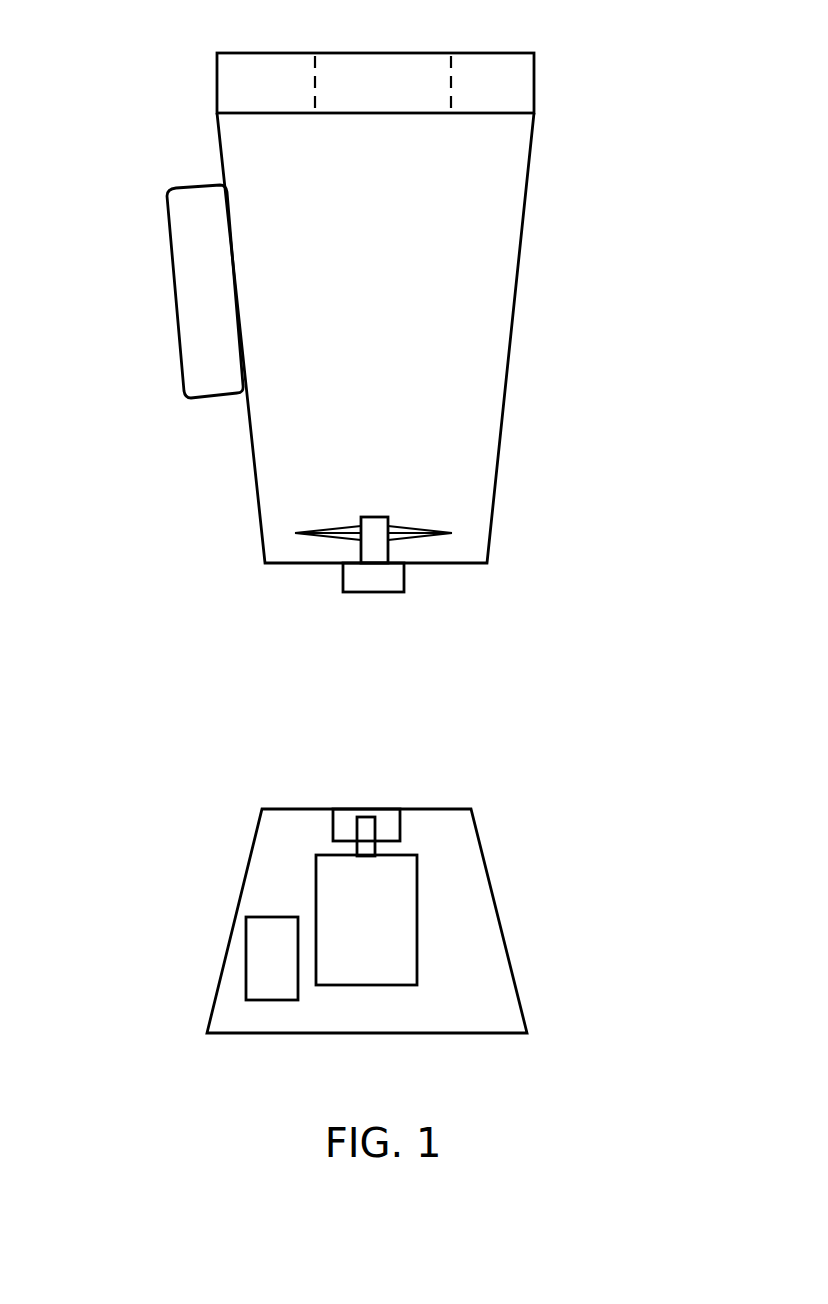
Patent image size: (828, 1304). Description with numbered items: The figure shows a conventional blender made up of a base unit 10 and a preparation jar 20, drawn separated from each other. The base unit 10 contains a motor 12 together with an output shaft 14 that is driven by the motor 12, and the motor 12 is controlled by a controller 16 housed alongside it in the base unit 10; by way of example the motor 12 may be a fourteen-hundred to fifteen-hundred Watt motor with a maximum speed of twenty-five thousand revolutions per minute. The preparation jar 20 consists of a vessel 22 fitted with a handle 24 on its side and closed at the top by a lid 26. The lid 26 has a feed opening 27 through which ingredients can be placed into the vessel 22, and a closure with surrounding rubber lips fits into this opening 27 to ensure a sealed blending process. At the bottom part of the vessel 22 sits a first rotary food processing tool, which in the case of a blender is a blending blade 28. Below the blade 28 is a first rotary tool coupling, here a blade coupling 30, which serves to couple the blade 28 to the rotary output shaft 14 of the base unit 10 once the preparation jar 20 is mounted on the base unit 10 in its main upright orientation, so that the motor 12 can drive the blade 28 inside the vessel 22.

The base unit 10 is at (517, 857).
The motor 12 is at (417, 930).
The output shaft 14 is at (362, 830).
The controller 16 is at (245, 953).
The preparation jar 20 is at (618, 265).
The vessel 22 is at (505, 420).
The handle 24 is at (172, 268).
The lid 26 is at (534, 81).
The feed opening 27 is at (316, 90).
The blending blade 28 is at (414, 530).
The blade coupling 30 is at (405, 573).